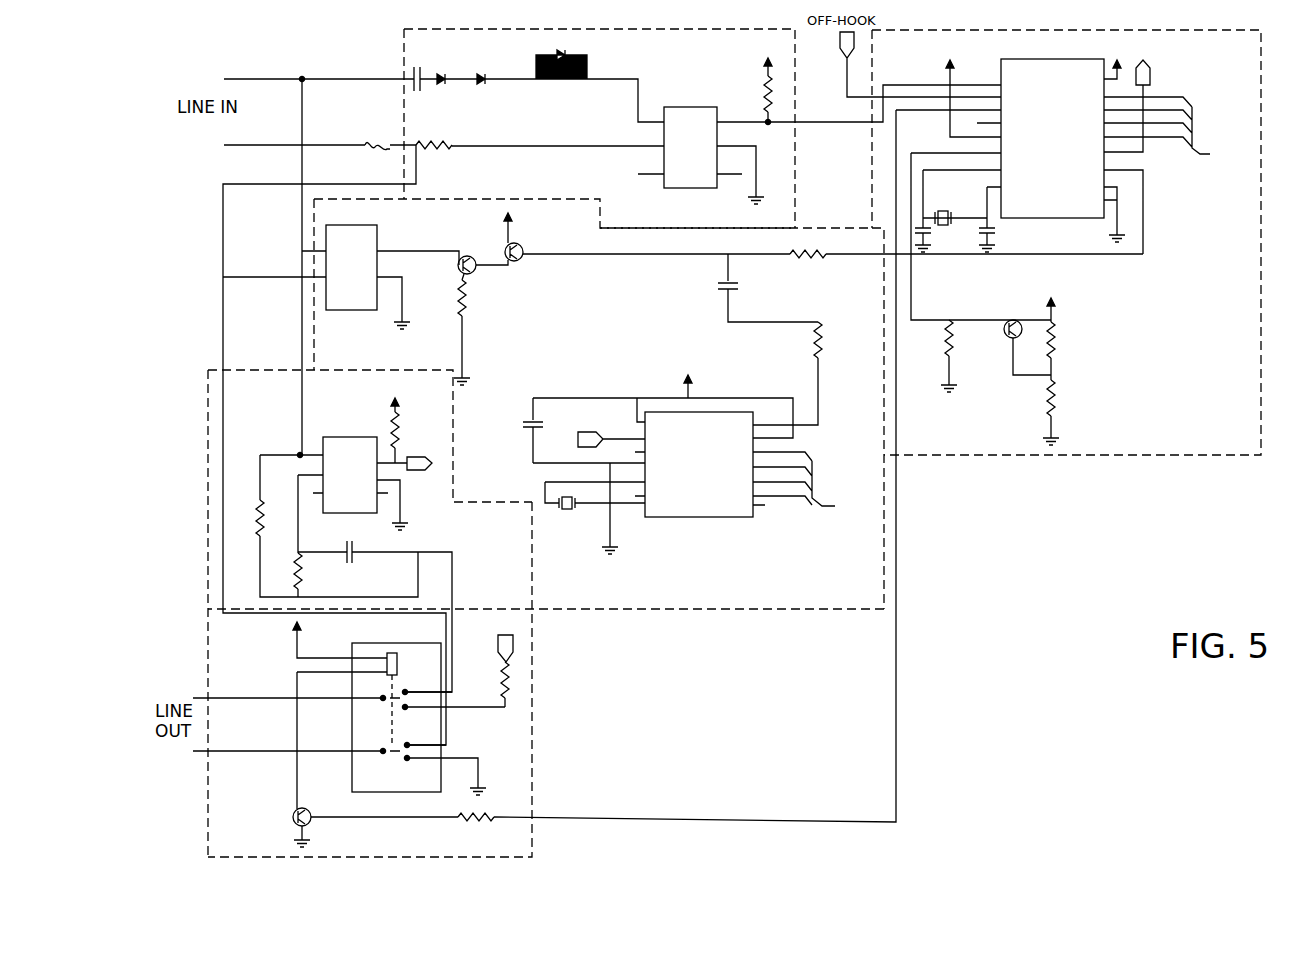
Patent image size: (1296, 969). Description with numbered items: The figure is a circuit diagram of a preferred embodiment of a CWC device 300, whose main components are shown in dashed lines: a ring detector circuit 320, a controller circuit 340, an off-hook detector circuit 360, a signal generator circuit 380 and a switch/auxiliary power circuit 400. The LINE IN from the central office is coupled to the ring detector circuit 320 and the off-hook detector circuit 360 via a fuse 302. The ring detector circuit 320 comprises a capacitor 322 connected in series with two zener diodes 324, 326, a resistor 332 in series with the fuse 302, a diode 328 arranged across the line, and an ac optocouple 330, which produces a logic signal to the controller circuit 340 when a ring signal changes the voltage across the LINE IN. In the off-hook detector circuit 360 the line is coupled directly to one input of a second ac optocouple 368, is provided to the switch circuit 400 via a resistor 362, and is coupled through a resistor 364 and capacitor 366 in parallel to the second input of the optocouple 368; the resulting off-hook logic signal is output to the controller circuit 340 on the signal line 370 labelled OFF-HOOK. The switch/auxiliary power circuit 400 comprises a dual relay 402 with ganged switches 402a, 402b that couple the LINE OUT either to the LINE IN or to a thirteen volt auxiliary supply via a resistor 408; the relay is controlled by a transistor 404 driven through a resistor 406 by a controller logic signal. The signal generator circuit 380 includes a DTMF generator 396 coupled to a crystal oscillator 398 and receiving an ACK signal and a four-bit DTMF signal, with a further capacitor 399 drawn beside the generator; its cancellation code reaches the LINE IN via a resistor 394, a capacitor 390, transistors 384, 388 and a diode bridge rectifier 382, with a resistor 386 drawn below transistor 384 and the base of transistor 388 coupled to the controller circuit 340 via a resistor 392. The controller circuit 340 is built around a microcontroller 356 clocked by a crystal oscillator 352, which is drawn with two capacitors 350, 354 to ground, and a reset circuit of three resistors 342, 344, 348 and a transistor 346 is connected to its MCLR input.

The CWC device 300 is at (952, 556).
The fuse 302 is at (371, 138).
The ring detector circuit 320 is at (404, 43).
The capacitor 322 is at (418, 62).
The zener diode 324 is at (441, 74).
The zener diode 326 is at (483, 72).
The diode 328 is at (560, 50).
The ac optocouple 330 is at (700, 107).
The resistor 332 is at (437, 136).
The controller circuit 340 is at (1165, 500).
The resistor 342 is at (956, 355).
The resistor 344 is at (1061, 388).
The transistor 346 is at (1012, 320).
The resistor 348 is at (1056, 346).
The capacitor 350 is at (926, 232).
The 4 MHz crystal oscillator 352 is at (948, 234).
The capacitor 354 is at (997, 231).
The microcontroller 356 is at (1048, 59).
The off-hook detector circuit 360 is at (230, 380).
The resistor 362 is at (258, 500).
The resistor 364 is at (306, 568).
The capacitor 366 is at (351, 566).
The ac optocouple 368 is at (352, 437).
The signal line 370 is at (398, 444).
The signal generator circuit 380 is at (788, 645).
The diode bridge rectifier 382 is at (365, 229).
The transistor 384 is at (475, 275).
The resistor 386 is at (467, 306).
The transistor 388 is at (523, 253).
The capacitor 390 is at (718, 288).
The resistor 392 is at (807, 259).
The resistor 394 is at (825, 350).
The DTMF generator 396 is at (709, 517).
The 3.6 MHz crystal oscillator 398 is at (568, 512).
The capacitor 399 is at (531, 420).
The switch/auxiliary power circuit 400 is at (532, 850).
The dual relay 402 is at (386, 652).
The ganged switch 402a is at (389, 700).
The ganged switch 402b is at (389, 756).
The transistor 404 is at (311, 822).
The resistor 406 is at (500, 812).
The resistor 408 is at (515, 687).